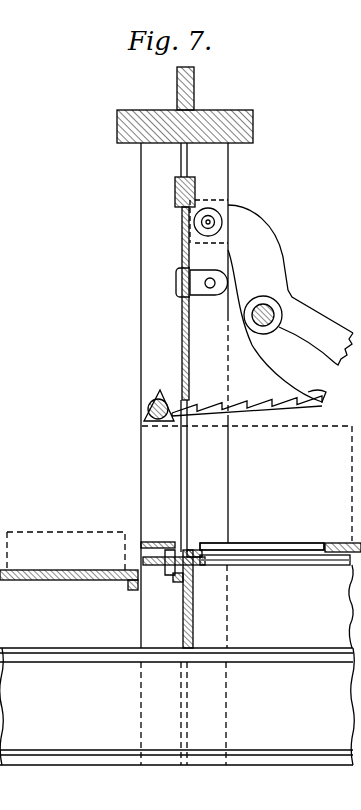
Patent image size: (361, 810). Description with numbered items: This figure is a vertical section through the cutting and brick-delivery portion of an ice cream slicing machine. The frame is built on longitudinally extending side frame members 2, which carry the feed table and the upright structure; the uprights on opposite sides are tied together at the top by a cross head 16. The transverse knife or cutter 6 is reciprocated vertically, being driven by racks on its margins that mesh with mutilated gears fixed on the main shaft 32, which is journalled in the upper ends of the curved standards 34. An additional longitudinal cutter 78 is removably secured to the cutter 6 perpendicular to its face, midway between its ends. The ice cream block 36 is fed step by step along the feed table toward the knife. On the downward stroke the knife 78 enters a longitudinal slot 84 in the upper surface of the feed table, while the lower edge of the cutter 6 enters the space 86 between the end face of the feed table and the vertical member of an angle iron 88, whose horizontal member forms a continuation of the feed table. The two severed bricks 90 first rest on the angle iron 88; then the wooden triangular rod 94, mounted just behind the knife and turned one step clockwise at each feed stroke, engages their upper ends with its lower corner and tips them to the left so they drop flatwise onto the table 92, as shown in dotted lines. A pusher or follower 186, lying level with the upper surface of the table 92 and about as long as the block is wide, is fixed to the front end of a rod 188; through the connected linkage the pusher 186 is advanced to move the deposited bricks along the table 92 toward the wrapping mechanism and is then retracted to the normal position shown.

The frame member 2 is at (56, 667).
The cutter 6 is at (182, 336).
The cross head 16 is at (211, 118).
The shaft 32 is at (263, 304).
The curved standard 34 is at (316, 312).
The ice cream block 36 is at (329, 428).
The longitudinal cutter 78 is at (316, 398).
The longitudinal slot 84 is at (284, 543).
The space 86 is at (191, 545).
The angle iron 88 is at (152, 541).
The severed brick 90 is at (160, 426).
The table 92 is at (50, 582).
The triangular rod 94 is at (158, 394).
The pusher 186 is at (168, 574).
The rod 188 is at (297, 566).